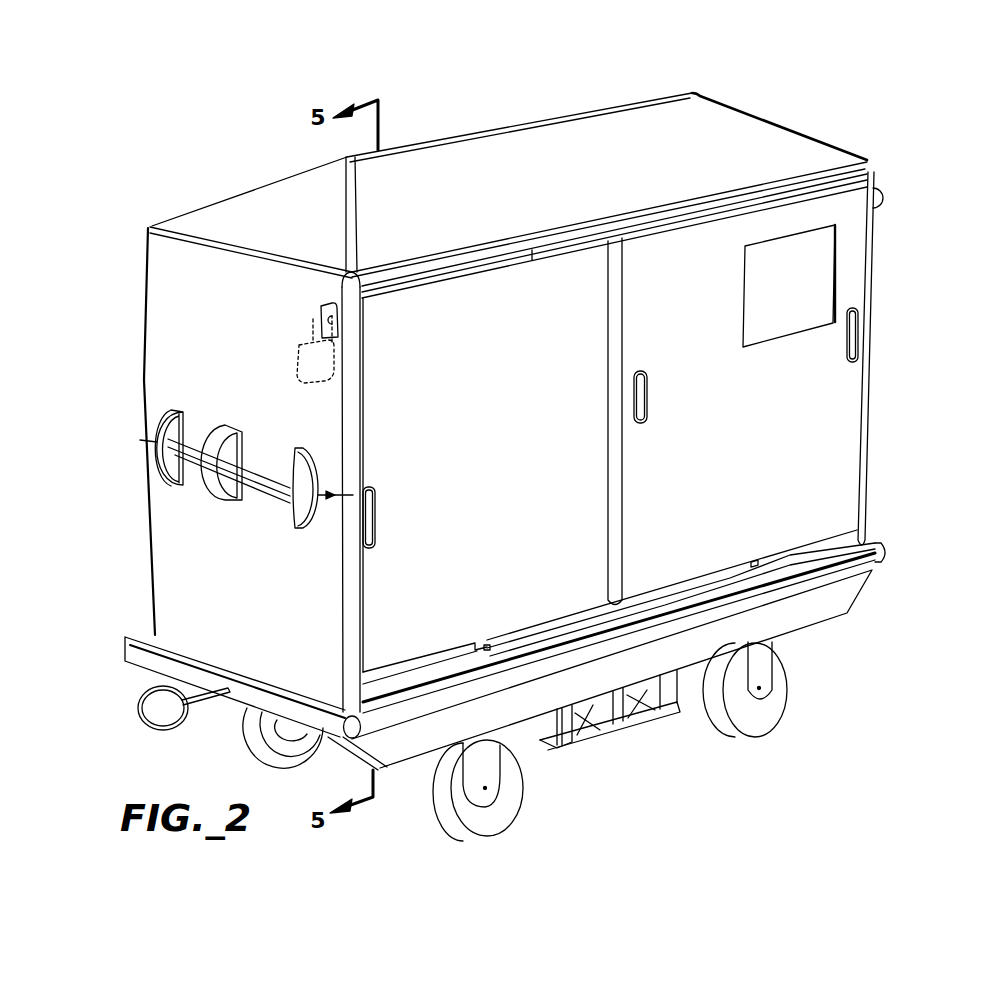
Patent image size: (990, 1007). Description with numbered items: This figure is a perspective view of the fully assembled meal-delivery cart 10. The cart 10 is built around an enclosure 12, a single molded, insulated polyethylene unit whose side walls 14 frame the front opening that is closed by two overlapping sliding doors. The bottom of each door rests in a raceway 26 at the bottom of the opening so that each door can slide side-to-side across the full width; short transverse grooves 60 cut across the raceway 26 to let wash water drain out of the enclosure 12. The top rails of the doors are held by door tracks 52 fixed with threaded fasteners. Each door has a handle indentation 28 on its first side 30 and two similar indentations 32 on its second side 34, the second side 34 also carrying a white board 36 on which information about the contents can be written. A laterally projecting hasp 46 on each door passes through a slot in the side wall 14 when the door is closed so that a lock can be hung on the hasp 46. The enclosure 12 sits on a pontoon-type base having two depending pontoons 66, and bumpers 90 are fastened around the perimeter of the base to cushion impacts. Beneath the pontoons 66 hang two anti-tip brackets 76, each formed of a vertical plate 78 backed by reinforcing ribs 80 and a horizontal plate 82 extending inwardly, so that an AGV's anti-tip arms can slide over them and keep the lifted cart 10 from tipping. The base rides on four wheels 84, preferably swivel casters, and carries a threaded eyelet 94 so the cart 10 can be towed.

The meal-delivery cart 10 is at (877, 125).
The enclosure 12 is at (150, 568).
The side wall 14 is at (168, 523).
The raceway 26 is at (503, 640).
The handle indentation 28 is at (373, 513).
The first side 30 is at (440, 533).
The indentations 32 is at (648, 387).
The second side 34 is at (681, 544).
The white board 36 is at (812, 272).
The hasp 46 is at (330, 313).
The door track 52 is at (653, 233).
The transverse grooves 60 is at (487, 648).
The pontoon 66 is at (850, 588).
The anti-tip bracket 76 is at (573, 713).
The vertical plate 78 is at (675, 700).
The reinforcing ribs 80 is at (650, 690).
The horizontal plate 82 is at (540, 743).
The wheel 84 is at (785, 683).
The bumper 90 is at (886, 558).
The threaded eyelet 94 is at (135, 697).